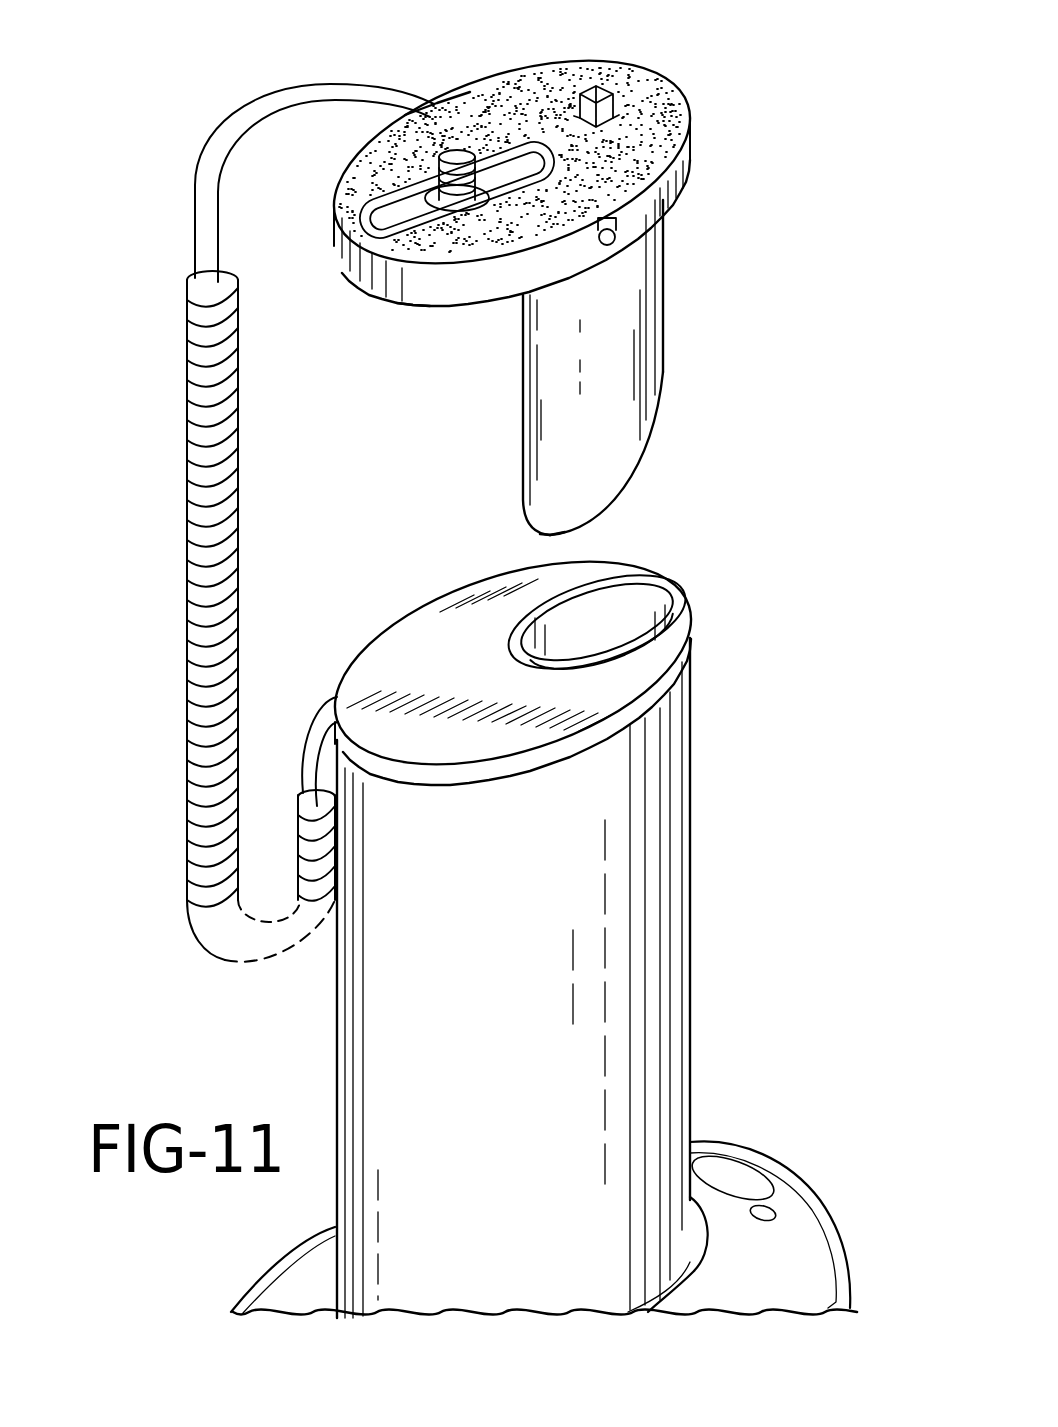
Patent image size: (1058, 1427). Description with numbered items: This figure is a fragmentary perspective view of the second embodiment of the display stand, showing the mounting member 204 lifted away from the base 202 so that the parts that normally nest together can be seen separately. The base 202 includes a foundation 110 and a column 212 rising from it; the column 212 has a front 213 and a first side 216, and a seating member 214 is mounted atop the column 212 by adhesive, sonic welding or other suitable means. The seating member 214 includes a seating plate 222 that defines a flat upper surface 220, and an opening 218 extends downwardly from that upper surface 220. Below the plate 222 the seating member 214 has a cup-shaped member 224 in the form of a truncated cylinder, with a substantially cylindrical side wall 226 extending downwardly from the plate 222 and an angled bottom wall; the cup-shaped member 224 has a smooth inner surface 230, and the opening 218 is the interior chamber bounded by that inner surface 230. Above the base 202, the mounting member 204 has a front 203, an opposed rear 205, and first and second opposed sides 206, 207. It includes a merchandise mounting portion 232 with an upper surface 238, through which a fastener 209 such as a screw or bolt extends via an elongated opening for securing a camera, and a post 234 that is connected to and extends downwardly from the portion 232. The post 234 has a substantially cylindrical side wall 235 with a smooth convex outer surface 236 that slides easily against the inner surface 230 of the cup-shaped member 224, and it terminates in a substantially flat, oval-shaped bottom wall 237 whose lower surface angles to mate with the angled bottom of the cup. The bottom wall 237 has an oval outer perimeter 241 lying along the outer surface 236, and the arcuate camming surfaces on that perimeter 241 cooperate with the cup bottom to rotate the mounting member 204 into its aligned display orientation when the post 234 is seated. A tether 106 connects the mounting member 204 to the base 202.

The tether 106 is at (185, 490).
The foundation 110 is at (795, 1155).
The base 202 is at (708, 1035).
The front 203 is at (625, 232).
The mounting member 204 is at (682, 88).
The rear 205 is at (437, 103).
The first side 206 is at (358, 272).
The second side 207 is at (660, 76).
The fastener 209 is at (445, 160).
The column 212 is at (698, 915).
The front 213 is at (622, 862).
The seating member 214 is at (437, 600).
The first side 216 is at (352, 1040).
The opening 218 is at (562, 622).
The upper surface 220 is at (402, 662).
The seating plate 222 is at (404, 628).
The cup-shaped member 224 is at (622, 603).
The side wall 226 is at (598, 634).
The inner surface 230 is at (630, 634).
The merchandise mounting portion 232 is at (405, 294).
The post 234 is at (520, 415).
The side wall 235 is at (664, 315).
The outer surface 236 is at (562, 350).
The bottom wall 237 is at (638, 457).
The upper surface 238 is at (523, 88).
The outer perimeter 241 is at (590, 523).